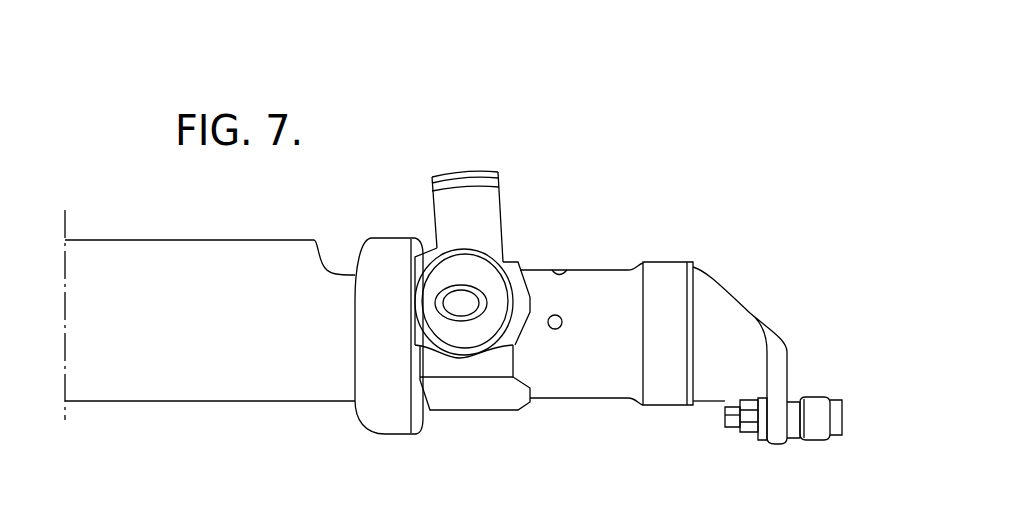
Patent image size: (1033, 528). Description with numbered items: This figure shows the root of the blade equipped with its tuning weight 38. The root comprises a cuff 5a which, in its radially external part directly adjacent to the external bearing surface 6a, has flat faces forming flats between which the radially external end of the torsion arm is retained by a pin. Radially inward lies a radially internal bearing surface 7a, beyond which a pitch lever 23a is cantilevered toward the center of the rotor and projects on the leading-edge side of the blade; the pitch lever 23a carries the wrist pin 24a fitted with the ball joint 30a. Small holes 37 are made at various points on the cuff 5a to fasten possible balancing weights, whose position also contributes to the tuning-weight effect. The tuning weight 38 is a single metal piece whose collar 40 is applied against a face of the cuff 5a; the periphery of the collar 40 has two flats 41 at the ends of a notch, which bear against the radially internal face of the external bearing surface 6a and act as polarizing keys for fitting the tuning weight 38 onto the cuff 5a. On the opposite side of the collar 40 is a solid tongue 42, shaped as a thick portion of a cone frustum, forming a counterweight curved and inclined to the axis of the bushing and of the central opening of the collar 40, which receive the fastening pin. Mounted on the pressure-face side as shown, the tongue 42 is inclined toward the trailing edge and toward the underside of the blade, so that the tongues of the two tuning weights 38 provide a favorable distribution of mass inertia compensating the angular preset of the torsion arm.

The cuff 5a is at (590, 297).
The external bearing surface 6a is at (382, 265).
The radially internal bearing surface 7a is at (663, 288).
The pitch lever 23a is at (780, 365).
The wrist pin 24a is at (798, 420).
The ball joint 30a is at (817, 425).
The small holes 37 is at (556, 330).
The tuning weight 38 is at (470, 358).
The collar 40 is at (485, 318).
The flats 41 is at (415, 333).
The tongue 42 is at (460, 203).